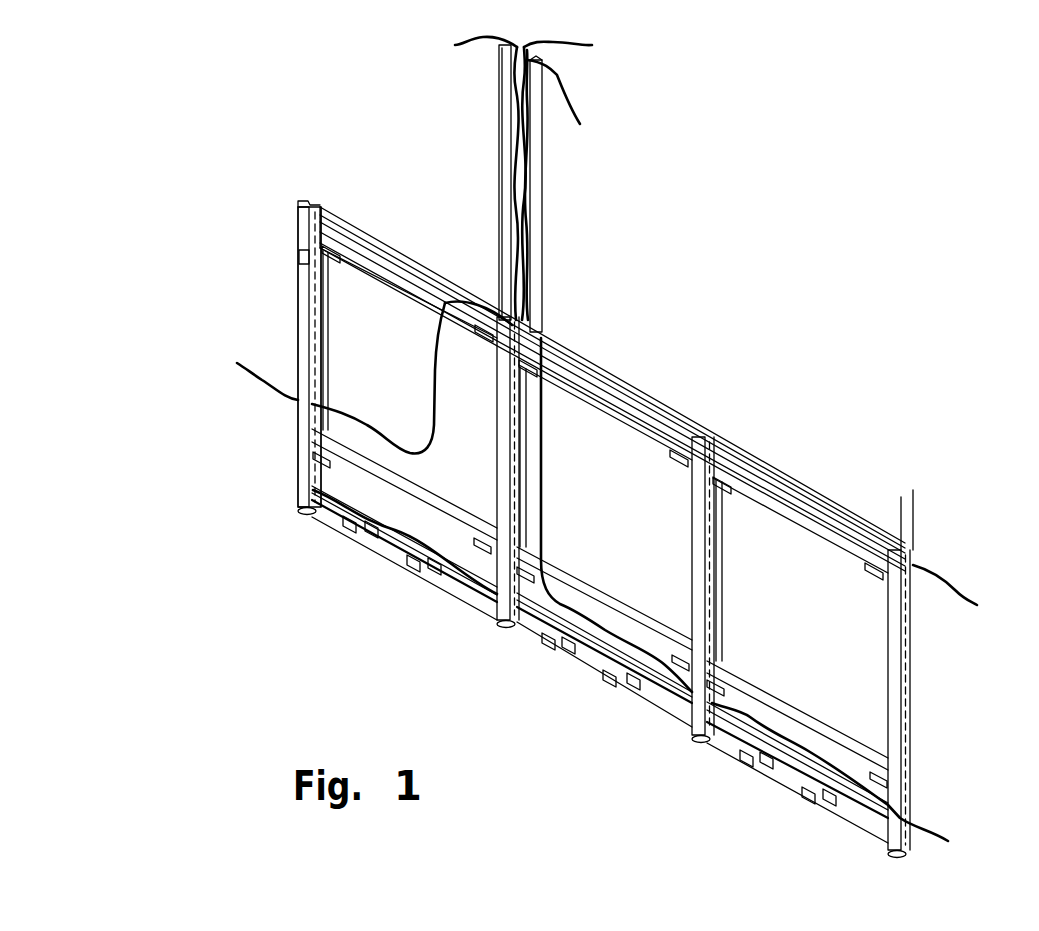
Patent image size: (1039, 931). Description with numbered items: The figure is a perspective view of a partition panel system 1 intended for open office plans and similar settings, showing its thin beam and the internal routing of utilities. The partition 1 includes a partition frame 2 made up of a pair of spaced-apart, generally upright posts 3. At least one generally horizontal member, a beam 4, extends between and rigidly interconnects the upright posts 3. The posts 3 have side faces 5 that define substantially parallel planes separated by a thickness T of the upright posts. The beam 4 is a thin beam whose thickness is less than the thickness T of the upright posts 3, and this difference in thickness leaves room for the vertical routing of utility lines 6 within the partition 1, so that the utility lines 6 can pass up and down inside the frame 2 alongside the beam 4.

The partition panel system 1 is at (617, 337).
The partition frame 2 is at (297, 317).
The upright posts 3 is at (298, 467).
The beam 4 is at (807, 520).
The side faces 5 is at (300, 258).
The utility lines 6 is at (580, 108).
The thickness T is at (873, 520).